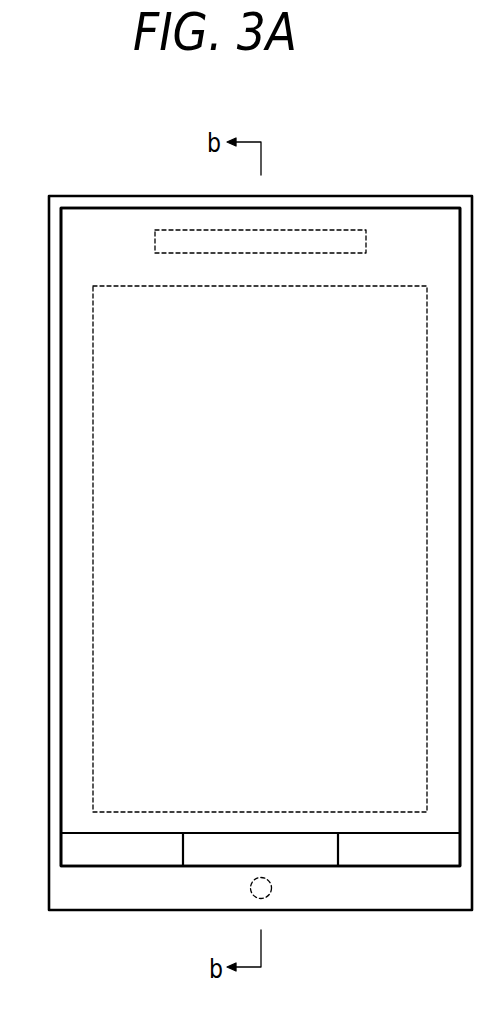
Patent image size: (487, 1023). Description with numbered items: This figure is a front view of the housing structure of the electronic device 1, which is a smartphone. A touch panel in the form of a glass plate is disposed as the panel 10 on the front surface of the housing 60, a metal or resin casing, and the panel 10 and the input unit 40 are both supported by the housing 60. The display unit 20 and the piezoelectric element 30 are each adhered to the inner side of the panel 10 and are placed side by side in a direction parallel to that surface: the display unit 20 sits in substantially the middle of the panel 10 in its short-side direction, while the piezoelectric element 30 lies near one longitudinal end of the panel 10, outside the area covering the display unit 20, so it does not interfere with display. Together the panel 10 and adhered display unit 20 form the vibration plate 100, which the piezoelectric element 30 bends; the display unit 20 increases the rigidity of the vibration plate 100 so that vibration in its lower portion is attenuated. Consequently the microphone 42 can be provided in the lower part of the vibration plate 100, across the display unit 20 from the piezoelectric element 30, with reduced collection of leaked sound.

The electronic device 1 is at (117, 182).
The vibration plate 100 is at (456, 133).
The panel 10 is at (353, 208).
The display unit 20 is at (393, 286).
The piezoelectric element 30 is at (155, 241).
The input unit 40 is at (75, 857).
The microphone 42 is at (272, 887).
The housing 60 is at (299, 196).